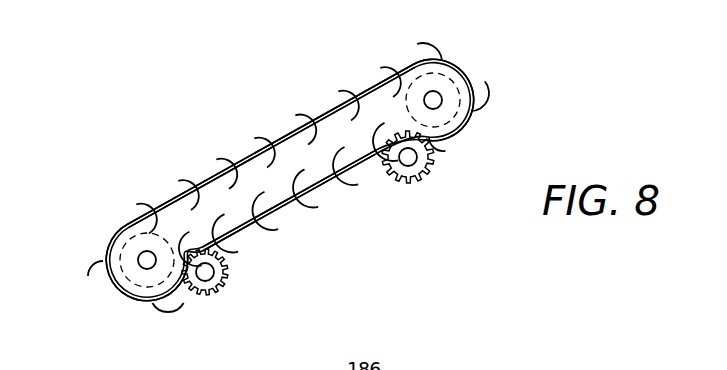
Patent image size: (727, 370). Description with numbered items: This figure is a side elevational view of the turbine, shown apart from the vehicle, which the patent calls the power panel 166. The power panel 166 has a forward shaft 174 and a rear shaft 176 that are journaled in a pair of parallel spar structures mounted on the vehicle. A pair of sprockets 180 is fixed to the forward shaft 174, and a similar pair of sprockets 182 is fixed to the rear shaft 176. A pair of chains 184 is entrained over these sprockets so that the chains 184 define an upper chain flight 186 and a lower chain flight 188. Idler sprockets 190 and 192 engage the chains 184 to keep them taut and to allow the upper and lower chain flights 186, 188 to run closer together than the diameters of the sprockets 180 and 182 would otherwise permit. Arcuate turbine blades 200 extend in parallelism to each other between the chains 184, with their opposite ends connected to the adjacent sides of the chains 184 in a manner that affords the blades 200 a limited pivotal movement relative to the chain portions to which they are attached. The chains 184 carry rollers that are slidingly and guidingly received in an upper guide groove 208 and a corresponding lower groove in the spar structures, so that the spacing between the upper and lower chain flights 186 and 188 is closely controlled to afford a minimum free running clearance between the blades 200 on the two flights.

The power panel 166 is at (275, 117).
The forward shaft 174 is at (138, 262).
The rear shaft 176 is at (436, 97).
The sprockets 180 is at (142, 299).
The sprockets 182 is at (457, 88).
The chains 184 is at (390, 78).
The upper chain flight 186 is at (240, 163).
The lower chain flight 188 is at (327, 180).
The idler sprocket 190 is at (203, 295).
The idler sprocket 192 is at (427, 172).
The arcuate turbine blades 200 is at (137, 205).
The upper guide groove 208 is at (296, 369).